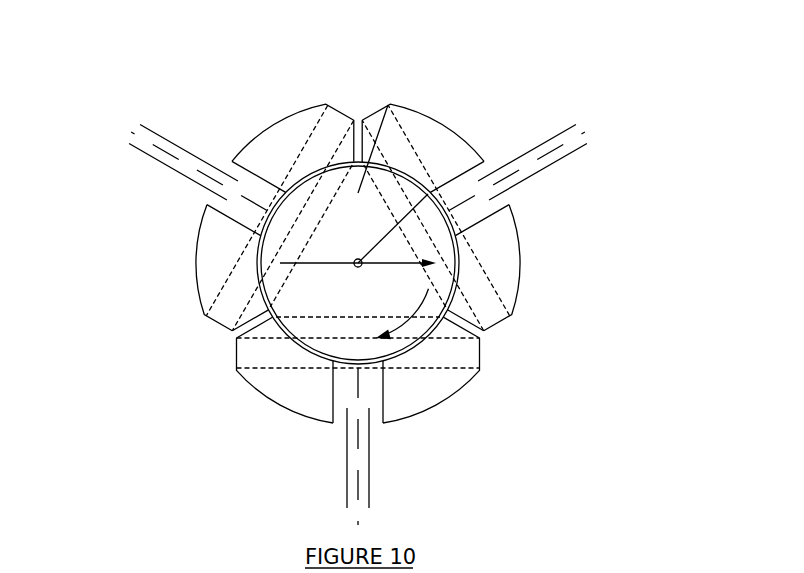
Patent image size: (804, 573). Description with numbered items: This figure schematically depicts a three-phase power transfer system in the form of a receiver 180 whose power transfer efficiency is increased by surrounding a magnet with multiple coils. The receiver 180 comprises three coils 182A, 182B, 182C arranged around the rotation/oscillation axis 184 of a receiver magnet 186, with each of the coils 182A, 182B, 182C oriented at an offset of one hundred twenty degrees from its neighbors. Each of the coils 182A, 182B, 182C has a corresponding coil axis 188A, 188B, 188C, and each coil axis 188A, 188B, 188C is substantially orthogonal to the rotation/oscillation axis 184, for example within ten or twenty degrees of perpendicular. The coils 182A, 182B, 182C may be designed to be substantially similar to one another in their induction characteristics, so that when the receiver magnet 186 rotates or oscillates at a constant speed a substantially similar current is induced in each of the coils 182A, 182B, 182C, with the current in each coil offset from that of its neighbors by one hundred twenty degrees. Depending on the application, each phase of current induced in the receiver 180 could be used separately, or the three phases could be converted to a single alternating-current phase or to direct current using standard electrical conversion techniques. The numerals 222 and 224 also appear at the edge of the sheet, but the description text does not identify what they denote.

The receiver 180 is at (453, 87).
The coil 182A is at (290, 123).
The coil 182B is at (308, 403).
The coil 182C is at (512, 270).
The rotation/oscillation axis 184 is at (433, 185).
The receiver magnet 186 is at (389, 105).
The coil axis 188A is at (135, 135).
The coil axis 188B is at (355, 486).
The coil axis 188C is at (528, 172).
The component 222 is at (60, 572).
The component 224 is at (639, 572).